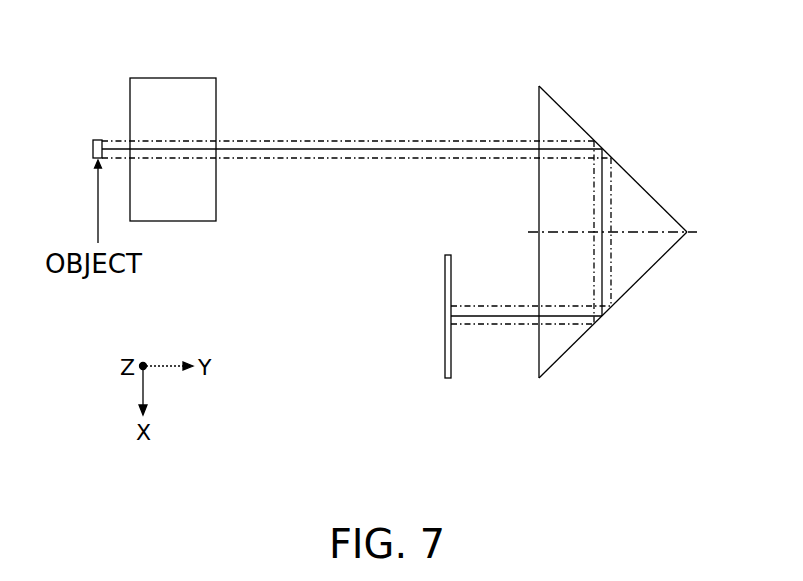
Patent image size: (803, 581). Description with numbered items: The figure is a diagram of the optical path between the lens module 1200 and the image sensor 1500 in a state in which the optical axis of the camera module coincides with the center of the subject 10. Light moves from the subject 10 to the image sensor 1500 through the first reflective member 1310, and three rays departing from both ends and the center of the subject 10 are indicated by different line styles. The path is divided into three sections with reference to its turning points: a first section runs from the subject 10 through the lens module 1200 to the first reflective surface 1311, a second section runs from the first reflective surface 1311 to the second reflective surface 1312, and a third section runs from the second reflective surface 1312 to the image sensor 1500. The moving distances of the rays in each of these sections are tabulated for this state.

The subject 10 is at (92, 147).
The lens module 1200 is at (171, 78).
The first reflective member 1310 is at (638, 198).
The first reflective surface 1311 is at (643, 189).
The second reflective surface 1312 is at (644, 275).
The image sensor 1500 is at (448, 379).